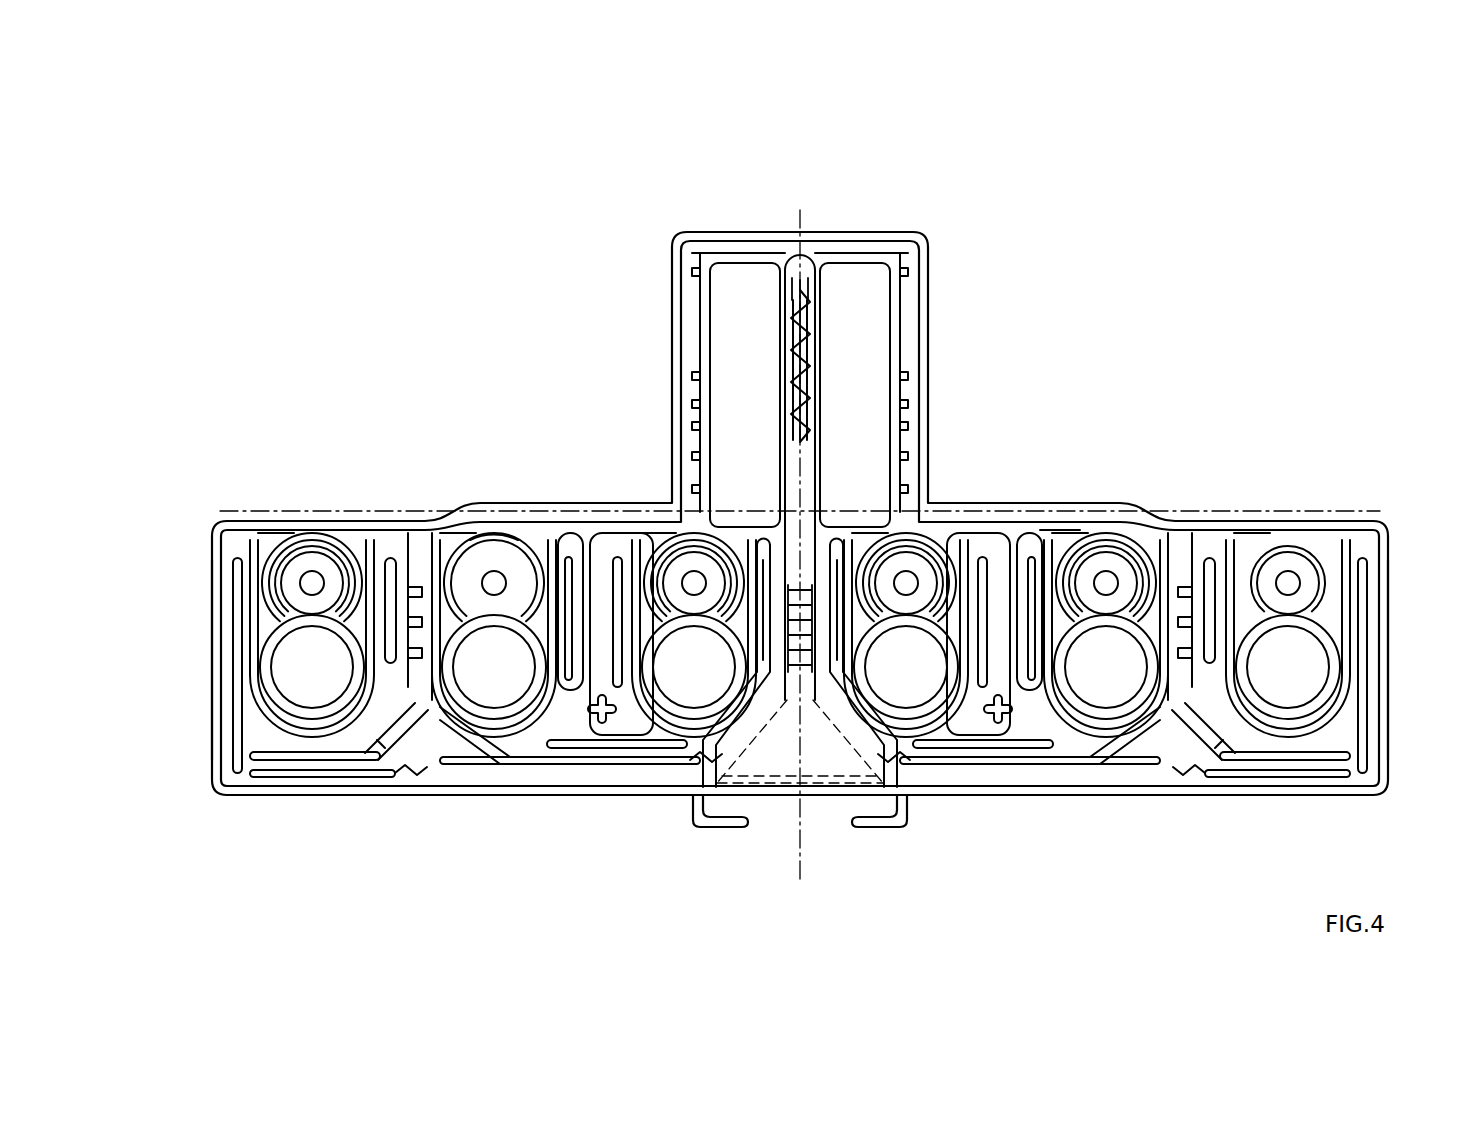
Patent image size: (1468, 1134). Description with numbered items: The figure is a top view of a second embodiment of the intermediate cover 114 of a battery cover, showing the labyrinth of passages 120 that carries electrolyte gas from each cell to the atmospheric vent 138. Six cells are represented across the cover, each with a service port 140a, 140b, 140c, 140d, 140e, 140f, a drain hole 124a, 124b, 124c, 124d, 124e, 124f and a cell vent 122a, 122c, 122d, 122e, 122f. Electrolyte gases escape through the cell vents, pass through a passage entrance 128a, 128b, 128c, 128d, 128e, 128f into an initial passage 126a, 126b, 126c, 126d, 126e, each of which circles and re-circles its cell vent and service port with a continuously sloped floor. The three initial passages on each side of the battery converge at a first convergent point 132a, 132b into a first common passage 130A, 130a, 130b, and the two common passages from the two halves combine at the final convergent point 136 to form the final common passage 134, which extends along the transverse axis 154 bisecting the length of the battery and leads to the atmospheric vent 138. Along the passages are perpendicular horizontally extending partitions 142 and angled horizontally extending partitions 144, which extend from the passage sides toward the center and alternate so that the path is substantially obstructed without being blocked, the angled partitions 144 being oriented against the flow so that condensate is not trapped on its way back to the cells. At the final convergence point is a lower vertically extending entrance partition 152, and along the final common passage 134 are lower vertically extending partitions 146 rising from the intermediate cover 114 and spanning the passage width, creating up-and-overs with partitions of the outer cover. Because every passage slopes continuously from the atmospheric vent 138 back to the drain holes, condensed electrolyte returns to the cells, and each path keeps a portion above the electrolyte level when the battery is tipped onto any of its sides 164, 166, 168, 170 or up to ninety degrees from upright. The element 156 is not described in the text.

The labyrinth of passages 120 is at (640, 260).
The intermediate cover 114 is at (665, 318).
The side of the battery 164 is at (806, 186).
The transverse axis 154 is at (798, 272).
The final common passage 134 is at (783, 268).
The final convergent point 136 is at (812, 262).
The lower vertically extending entrance partition 152 is at (830, 258).
The lower vertically extending partitions 146 is at (807, 673).
The atmospheric vent 138 is at (782, 765).
The side of the battery 168 is at (836, 818).
The angled horizontally extending partitions 144 is at (685, 400).
The perpendicular horizontally extending partitions 142 is at (410, 560).
The top wall 156 is at (262, 520).
The side of the battery 170 is at (194, 585).
The side of the battery 166 is at (1402, 627).
The first common passage 130A is at (509, 535).
The first common passage 130a is at (360, 745).
The first common passage 130b is at (1050, 525).
The first convergent point 132a is at (243, 782).
The first convergent point 132b is at (1355, 782).
The drain hole 124a is at (320, 580).
The drain hole 124b is at (502, 578).
The drain hole 124c is at (700, 580).
The drain hole 124d is at (897, 580).
The drain hole 124e is at (1115, 580).
The drain hole 124f is at (1297, 578).
The cell vent 122a is at (355, 568).
The cell vent 122c is at (712, 525).
The cell vent 122d is at (858, 545).
The cell vent 122e is at (1146, 520).
The cell vent 122f is at (1345, 575).
The initial passage 126a is at (308, 538).
The initial passage 126b is at (472, 535).
The initial passage 126c is at (644, 535).
The initial passage 126d is at (988, 540).
The initial passage 126e is at (1035, 543).
The passage entrance 128a is at (283, 613).
The passage entrance 128b is at (523, 612).
The passage entrance 128c is at (790, 690).
The passage entrance 128d is at (860, 615).
The passage entrance 128e is at (1050, 620).
The passage entrance 128f is at (1255, 612).
The service port 140a is at (343, 671).
The service port 140b is at (525, 671).
The service port 140c is at (724, 671).
The service port 140d is at (936, 671).
The service port 140e is at (1136, 671).
The service port 140f is at (1317, 671).